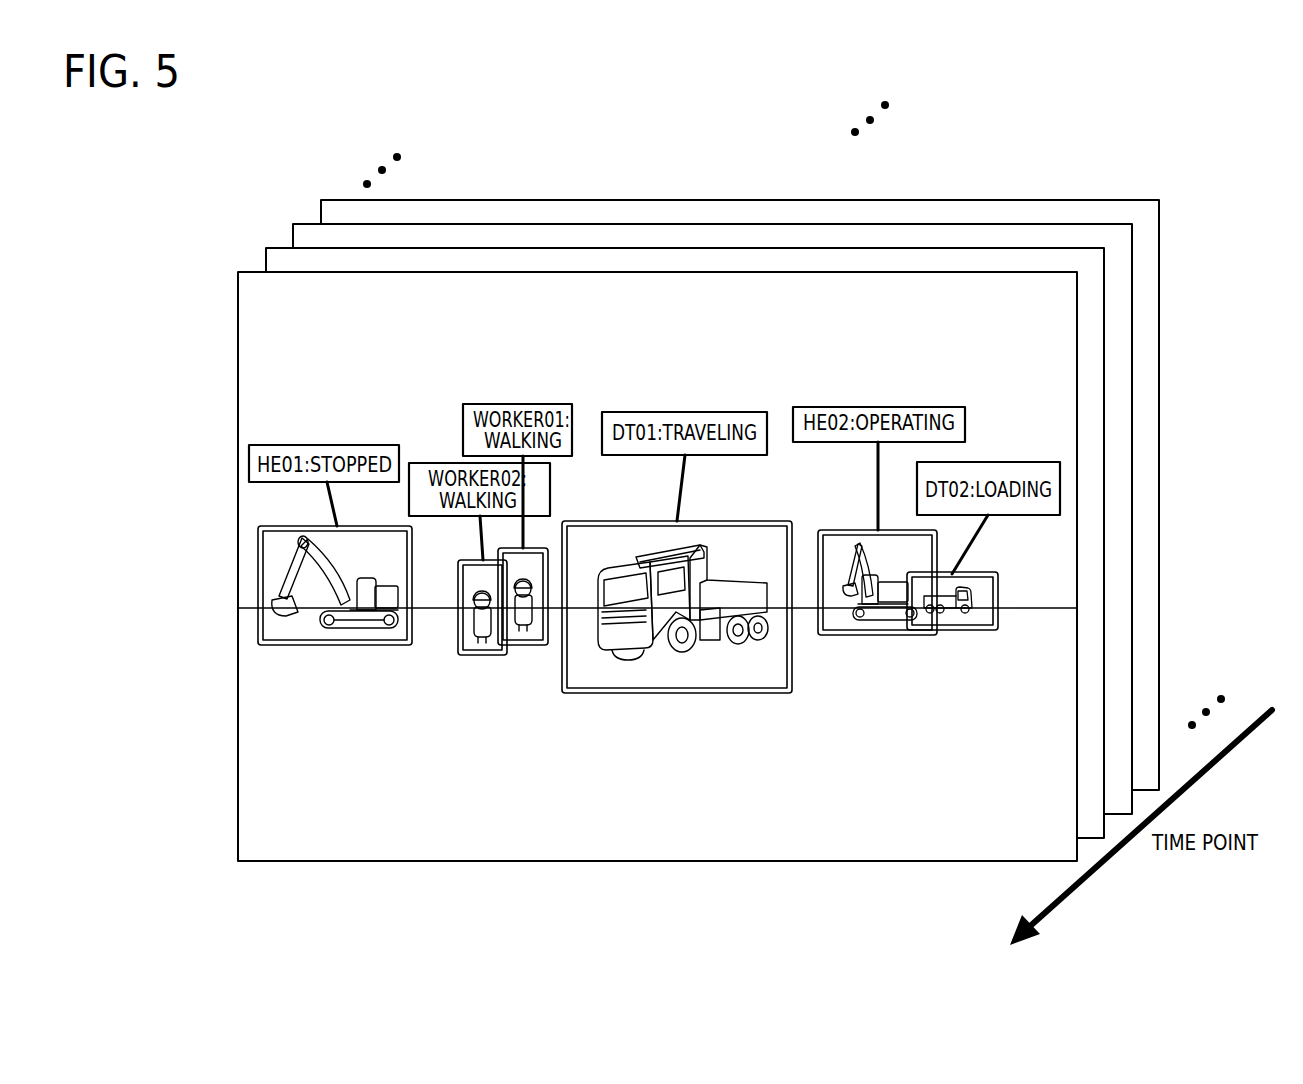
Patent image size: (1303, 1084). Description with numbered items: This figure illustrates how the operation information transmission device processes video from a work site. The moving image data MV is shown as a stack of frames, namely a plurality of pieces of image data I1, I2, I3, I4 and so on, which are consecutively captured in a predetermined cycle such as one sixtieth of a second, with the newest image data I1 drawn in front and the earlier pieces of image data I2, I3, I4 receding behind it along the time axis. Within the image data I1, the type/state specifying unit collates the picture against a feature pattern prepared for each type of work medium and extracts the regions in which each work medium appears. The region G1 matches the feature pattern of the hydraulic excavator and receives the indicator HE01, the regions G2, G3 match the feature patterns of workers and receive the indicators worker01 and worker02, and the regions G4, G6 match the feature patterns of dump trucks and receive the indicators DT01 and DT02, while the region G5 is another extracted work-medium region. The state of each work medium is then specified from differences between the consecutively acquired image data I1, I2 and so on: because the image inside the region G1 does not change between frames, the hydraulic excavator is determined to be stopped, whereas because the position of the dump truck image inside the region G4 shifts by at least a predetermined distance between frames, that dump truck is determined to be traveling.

The moving image data MV is at (420, 105).
The image data I1 is at (685, 272).
The image data I2 is at (725, 248).
The image data I3 is at (767, 224).
The image data I4 is at (808, 201).
The region G1 is at (338, 645).
The region G2 is at (482, 658).
The region G3 is at (523, 648).
The region G4 is at (677, 693).
The region G5 is at (873, 636).
The region G6 is at (965, 631).